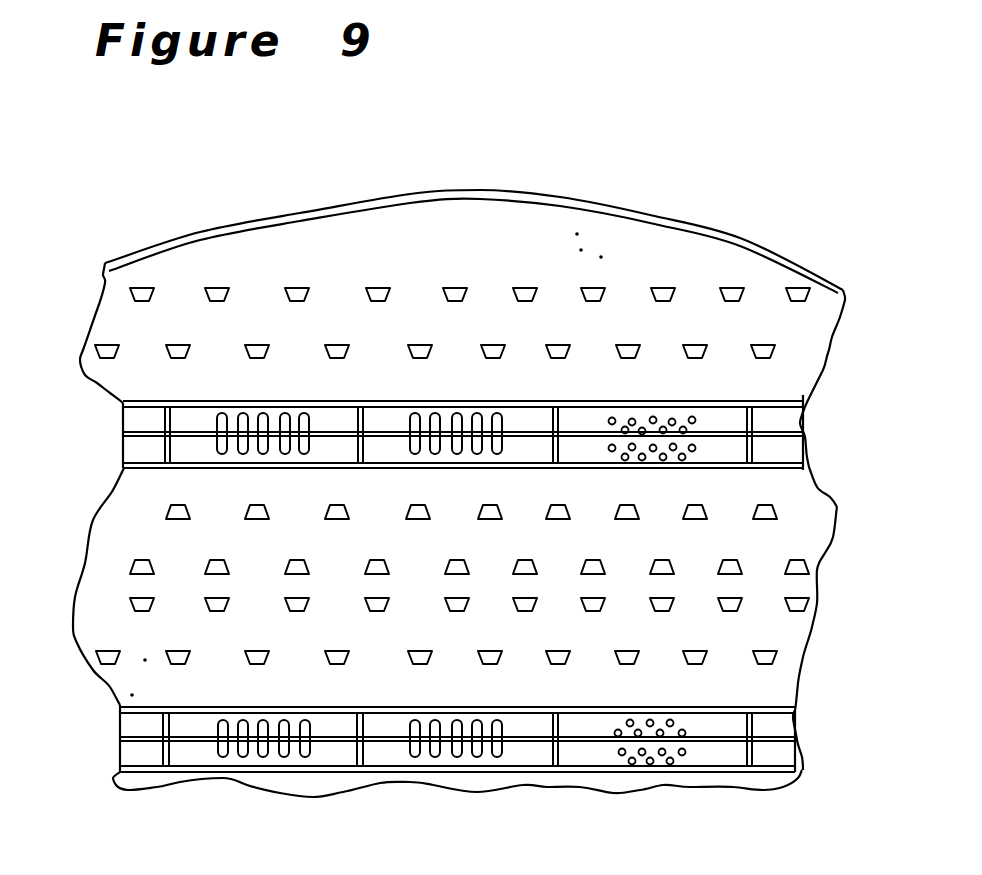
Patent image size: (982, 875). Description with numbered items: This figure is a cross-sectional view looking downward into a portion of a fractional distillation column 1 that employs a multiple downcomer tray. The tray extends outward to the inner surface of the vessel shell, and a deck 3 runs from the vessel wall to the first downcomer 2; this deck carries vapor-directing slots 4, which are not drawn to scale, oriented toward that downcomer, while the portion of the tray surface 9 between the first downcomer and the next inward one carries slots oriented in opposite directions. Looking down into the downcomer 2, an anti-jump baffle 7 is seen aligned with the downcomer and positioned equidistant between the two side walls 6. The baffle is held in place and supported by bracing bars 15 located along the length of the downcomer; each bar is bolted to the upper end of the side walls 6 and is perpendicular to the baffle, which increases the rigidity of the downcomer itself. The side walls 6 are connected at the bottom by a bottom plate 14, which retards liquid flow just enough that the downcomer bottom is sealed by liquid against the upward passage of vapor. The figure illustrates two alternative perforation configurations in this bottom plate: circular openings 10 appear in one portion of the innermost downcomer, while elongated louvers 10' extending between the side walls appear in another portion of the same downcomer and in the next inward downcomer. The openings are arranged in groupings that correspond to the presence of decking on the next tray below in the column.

The fractional distillation column 1 is at (738, 236).
The downcomer 2 is at (780, 400).
The decking 3 is at (282, 242).
The cells 4 is at (335, 350).
The downcomer side walls 6 is at (162, 400).
The anti-jump baffle 7 is at (783, 442).
The matrix particles 9 is at (600, 255).
The circular openings 10 is at (655, 593).
The elongated louvers 10' is at (359, 617).
The bottom plate 14 is at (515, 757).
The bracing bar 15 is at (160, 418).